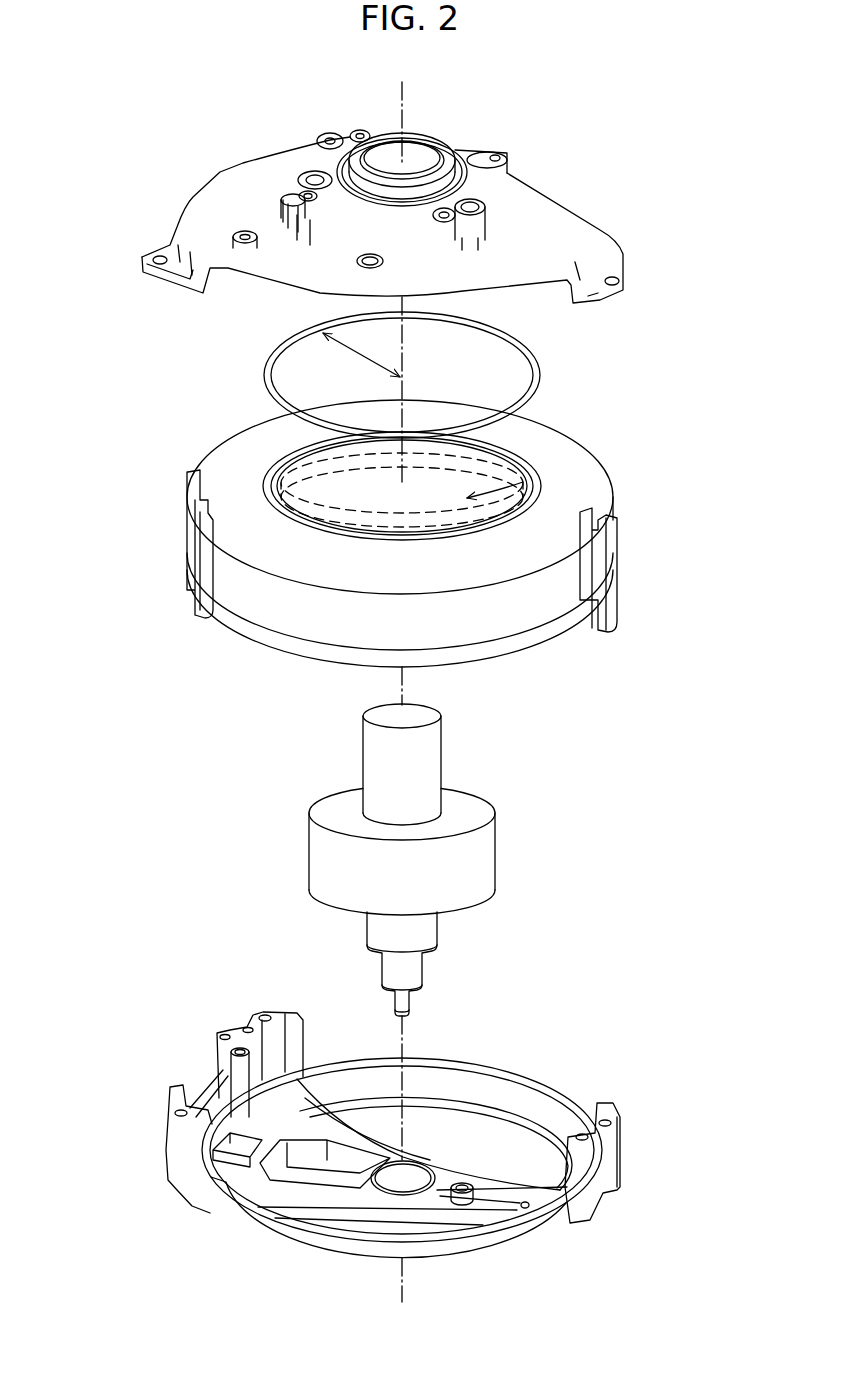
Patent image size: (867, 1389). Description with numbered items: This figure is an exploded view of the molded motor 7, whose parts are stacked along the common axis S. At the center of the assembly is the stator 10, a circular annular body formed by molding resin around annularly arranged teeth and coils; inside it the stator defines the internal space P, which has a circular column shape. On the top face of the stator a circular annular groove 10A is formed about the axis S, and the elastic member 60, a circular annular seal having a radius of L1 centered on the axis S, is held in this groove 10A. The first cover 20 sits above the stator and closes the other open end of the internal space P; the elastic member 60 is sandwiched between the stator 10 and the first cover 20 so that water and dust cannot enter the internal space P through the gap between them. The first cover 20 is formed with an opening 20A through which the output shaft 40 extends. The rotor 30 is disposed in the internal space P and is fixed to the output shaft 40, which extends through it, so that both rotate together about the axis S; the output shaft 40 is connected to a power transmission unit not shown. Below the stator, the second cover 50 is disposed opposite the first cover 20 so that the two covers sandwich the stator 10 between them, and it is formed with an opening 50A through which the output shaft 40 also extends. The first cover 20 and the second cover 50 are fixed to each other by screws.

The molded motor 7 is at (678, 118).
The first cover 20 is at (163, 158).
The opening 20A is at (417, 167).
The elastic member 60 is at (538, 376).
The radius L1 is at (360, 345).
The stator 10 is at (163, 455).
The groove 10A is at (530, 463).
The internal space P is at (538, 489).
The axis S is at (401, 694).
The output shaft 40 is at (427, 750).
The rotor 30 is at (483, 855).
The second cover 50 is at (140, 1078).
The opening 50A is at (412, 1173).